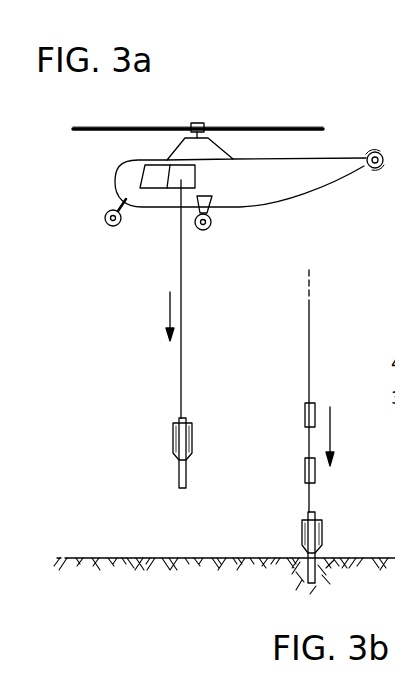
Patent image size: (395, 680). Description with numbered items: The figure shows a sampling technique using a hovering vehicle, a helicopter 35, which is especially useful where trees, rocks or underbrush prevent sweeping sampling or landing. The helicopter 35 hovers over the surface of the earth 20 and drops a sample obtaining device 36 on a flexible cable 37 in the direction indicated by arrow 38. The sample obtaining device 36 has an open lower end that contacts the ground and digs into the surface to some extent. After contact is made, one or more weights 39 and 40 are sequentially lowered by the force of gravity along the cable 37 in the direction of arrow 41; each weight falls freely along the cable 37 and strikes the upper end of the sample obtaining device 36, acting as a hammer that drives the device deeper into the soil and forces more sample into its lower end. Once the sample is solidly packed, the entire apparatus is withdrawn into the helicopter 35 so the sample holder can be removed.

In FIG. 3b, the surface of the earth 20 is at (210, 558).
In FIG. 3a, the helicopter 35 is at (285, 182).
In FIG. 3a, the sample obtaining device 36 is at (179, 470).
In FIG. 3b, the sample obtaining device 36 is at (316, 555).
In FIG. 3a, the flexible cable 37 is at (181, 311).
In FIG. 3b, the flexible cable 37 is at (309, 360).
In FIG. 3a, the arrow 38 is at (164, 316).
In FIG. 3b, the weight 39 is at (305, 470).
In FIG. 3b, the weight 40 is at (305, 416).
In FIG. 3b, the arrow 41 is at (330, 430).